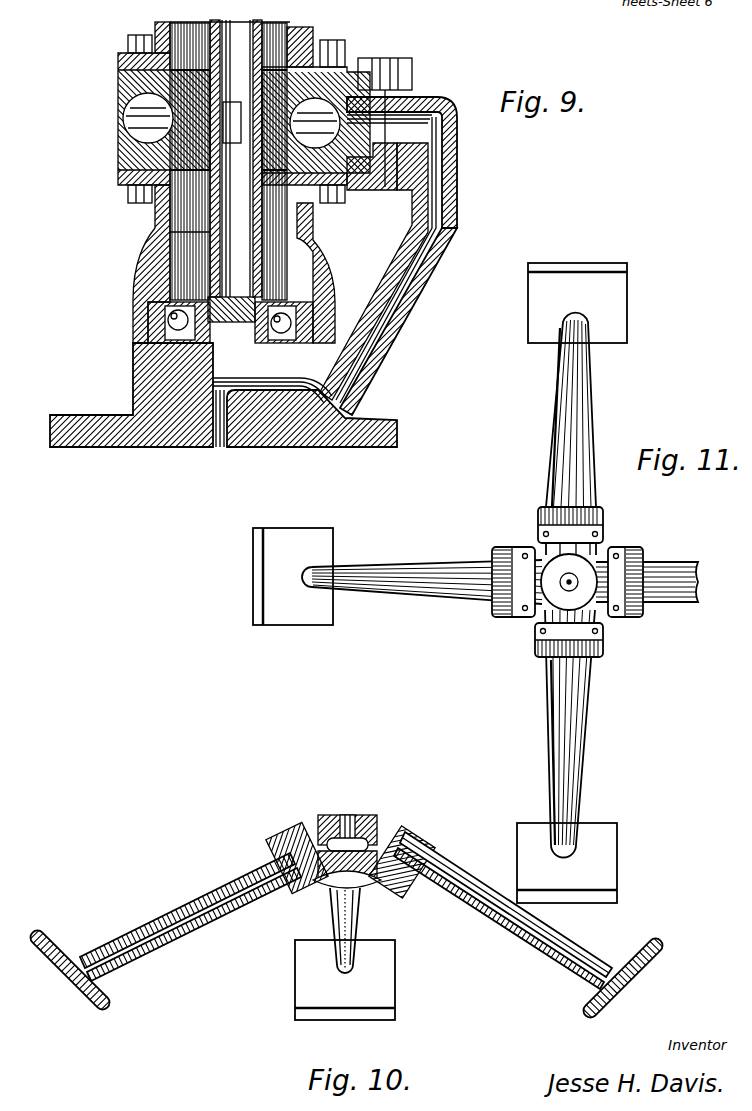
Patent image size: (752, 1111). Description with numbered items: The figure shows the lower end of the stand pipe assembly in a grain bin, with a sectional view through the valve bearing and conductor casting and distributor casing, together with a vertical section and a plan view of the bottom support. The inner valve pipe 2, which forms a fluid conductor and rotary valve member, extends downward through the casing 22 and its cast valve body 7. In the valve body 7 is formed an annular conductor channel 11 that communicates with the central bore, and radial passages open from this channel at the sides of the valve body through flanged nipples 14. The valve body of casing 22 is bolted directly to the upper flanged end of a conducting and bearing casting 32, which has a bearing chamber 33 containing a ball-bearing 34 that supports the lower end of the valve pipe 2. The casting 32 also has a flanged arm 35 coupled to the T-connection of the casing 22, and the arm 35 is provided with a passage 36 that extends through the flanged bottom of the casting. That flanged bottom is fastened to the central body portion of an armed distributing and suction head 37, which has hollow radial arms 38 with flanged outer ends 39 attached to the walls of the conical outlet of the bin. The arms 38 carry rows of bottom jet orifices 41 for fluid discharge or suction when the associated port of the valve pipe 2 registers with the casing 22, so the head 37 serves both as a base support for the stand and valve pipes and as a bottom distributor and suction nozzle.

In FIG. 9, the valve pipe 2 is at (258, 228).
In FIG. 9, the valve body 7 is at (137, 79).
In FIG. 9, the annular conductor channel 11 is at (130, 126).
In FIG. 9, the flanged nipple 14 is at (160, 148).
In FIG. 9, the casing 22 is at (155, 30).
In FIG. 9, the conducting and bearing casting 32 is at (135, 365).
In FIG. 9, the bearing chamber 33 is at (275, 161).
In FIG. 9, the ball-bearing 34 is at (155, 310).
In FIG. 9, the flanged arm 35 is at (433, 97).
In FIG. 9, the passage 36 is at (405, 268).
In FIG. 11, the armed distributing and suction head 37 is at (541, 619).
In FIG. 10, the armed distributing and suction head 37 is at (384, 834).
In FIG. 11, the hollow radial arm 38 is at (560, 414).
In FIG. 10, the hollow radial arm 38 is at (221, 880).
In FIG. 11, the flanged outer end 39 is at (620, 309).
In FIG. 10, the flanged outer end 39 is at (58, 940).
In FIG. 10, the jet orifice 41 is at (252, 930).